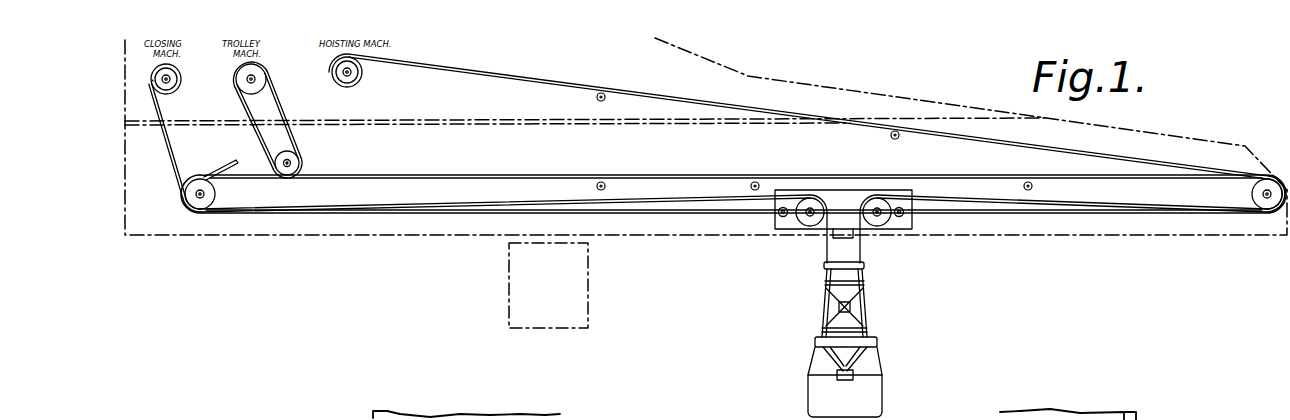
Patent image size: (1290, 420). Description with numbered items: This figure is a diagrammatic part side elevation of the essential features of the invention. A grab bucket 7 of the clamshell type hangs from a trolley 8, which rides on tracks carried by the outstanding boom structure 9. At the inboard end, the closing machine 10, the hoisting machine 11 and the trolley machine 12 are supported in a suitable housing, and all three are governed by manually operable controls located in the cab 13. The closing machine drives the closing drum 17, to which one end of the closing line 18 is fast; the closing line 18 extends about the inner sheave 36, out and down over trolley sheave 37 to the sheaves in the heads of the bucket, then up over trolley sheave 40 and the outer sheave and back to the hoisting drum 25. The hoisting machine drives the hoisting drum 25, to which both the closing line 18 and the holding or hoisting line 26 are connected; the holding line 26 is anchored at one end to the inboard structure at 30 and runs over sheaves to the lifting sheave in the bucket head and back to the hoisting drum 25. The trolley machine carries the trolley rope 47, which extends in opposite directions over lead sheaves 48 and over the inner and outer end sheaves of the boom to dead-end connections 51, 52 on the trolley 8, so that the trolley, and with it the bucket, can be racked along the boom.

The grab bucket 7 is at (872, 318).
The trolley 8 is at (848, 197).
The boom structure 9 is at (1050, 237).
The closing machine 10 is at (185, 78).
The hoisting machine 11 is at (369, 76).
The trolley machine 12 is at (277, 70).
The cab 13 is at (588, 278).
The closing drum 17 is at (153, 82).
The closing line 18 is at (540, 83).
The hoisting drum 25 is at (345, 87).
The holding line 26 is at (196, 175).
The anchor 30 is at (222, 165).
The inner sheave 36 is at (203, 205).
The trolley sheave 37 is at (812, 210).
The trolley sheave 40 is at (878, 210).
The trolley rope 47 is at (300, 143).
The lead sheaves 48 is at (300, 160).
The dead-end connection 51 is at (780, 218).
The dead-end connection 52 is at (902, 218).